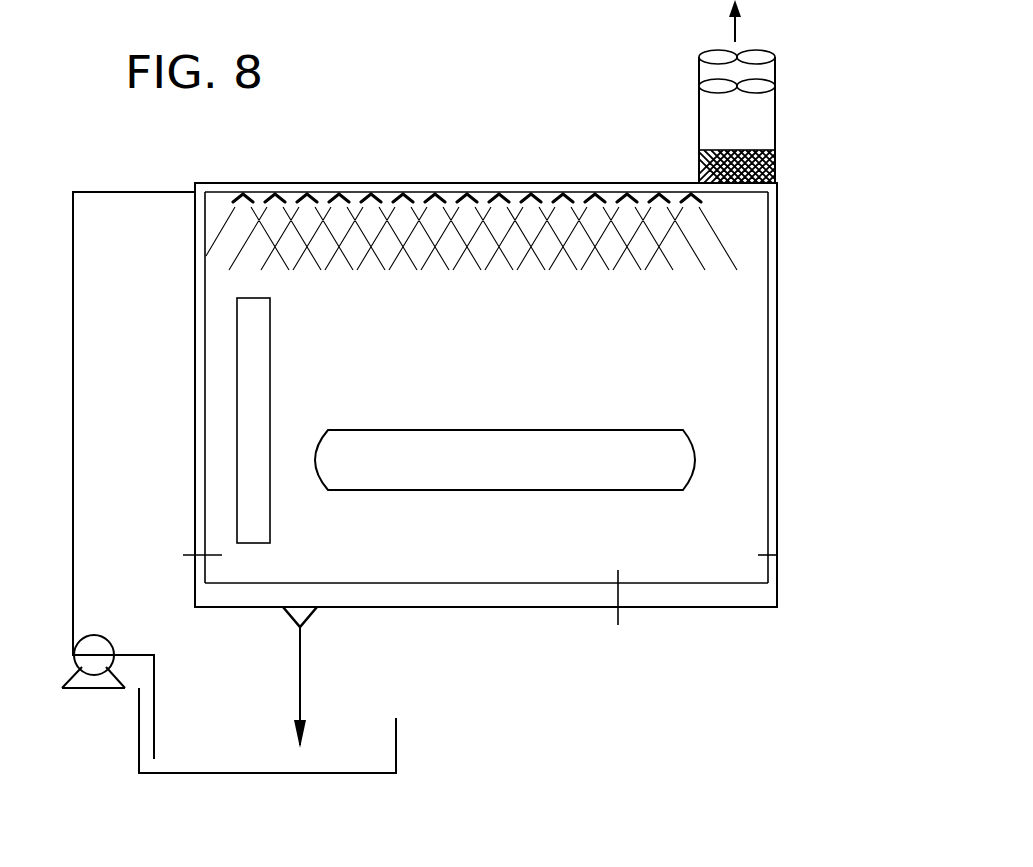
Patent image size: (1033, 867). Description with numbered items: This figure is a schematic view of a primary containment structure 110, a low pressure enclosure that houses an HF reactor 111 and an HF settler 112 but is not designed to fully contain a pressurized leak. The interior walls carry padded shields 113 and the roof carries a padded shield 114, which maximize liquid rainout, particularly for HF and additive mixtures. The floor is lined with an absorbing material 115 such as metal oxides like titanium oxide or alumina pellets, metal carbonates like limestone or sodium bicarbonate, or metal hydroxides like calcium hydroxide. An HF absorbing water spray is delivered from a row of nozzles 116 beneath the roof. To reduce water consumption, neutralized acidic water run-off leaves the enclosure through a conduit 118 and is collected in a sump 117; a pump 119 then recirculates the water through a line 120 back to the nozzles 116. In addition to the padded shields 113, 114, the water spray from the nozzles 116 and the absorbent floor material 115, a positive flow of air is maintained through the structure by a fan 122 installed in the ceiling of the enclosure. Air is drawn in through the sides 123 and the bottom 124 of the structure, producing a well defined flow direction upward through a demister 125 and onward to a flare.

The primary containment structure 110 is at (790, 272).
The HF reactor 111 is at (257, 362).
The HF settler 112 is at (540, 430).
The padded shields 113 is at (197, 358).
The padded shield 114 is at (483, 193).
The absorbing material 115 is at (713, 597).
The nozzles 116 is at (345, 198).
The sump 117 is at (365, 735).
The conduit 118 is at (300, 675).
The pump 119 is at (73, 665).
The line 120 is at (73, 480).
The fan 122 is at (757, 95).
The sides 123 is at (192, 550).
The bottom 124 is at (617, 597).
The demister 125 is at (775, 170).